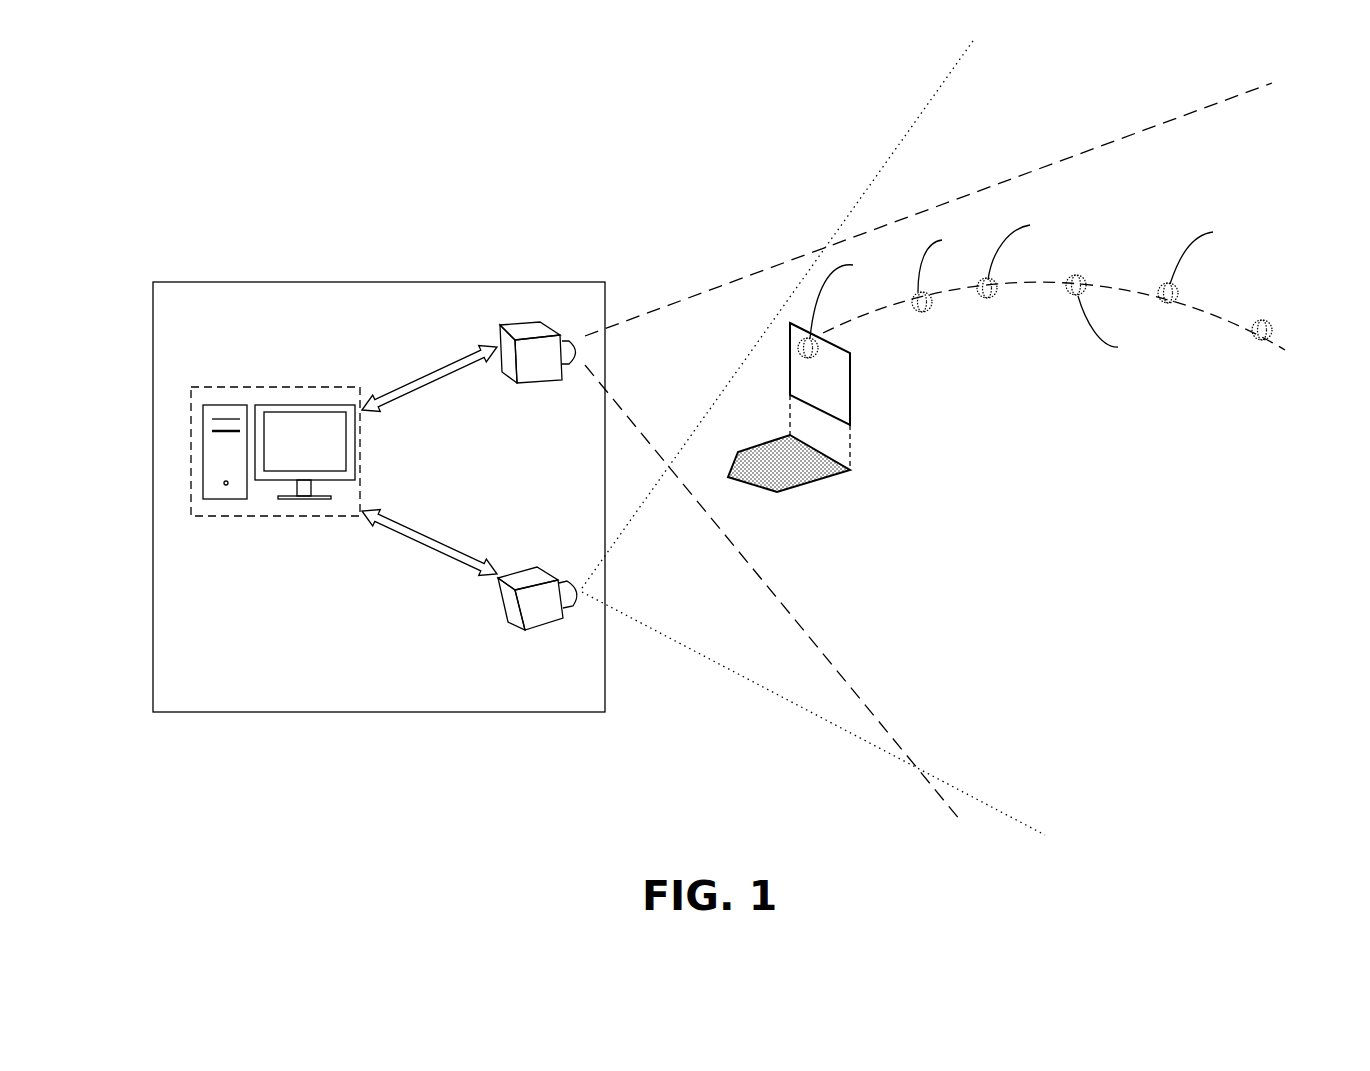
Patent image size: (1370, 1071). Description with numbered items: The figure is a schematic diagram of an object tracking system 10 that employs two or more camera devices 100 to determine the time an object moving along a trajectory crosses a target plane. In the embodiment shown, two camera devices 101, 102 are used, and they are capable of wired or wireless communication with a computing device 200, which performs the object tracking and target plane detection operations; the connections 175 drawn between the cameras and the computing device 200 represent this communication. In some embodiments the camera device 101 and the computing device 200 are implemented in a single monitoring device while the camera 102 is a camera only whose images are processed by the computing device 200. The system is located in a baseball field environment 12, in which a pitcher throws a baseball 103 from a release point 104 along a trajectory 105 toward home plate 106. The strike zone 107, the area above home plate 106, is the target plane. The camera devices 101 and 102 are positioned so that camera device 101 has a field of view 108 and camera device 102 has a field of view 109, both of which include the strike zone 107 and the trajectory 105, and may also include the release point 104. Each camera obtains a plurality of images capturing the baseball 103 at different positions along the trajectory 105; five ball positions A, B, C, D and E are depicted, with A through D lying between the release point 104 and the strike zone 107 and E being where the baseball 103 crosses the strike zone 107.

The object tracking system 10 is at (232, 282).
The baseball field environment 12 is at (663, 168).
The camera devices 100 is at (495, 242).
The camera device 101 is at (537, 383).
The camera device 102 is at (546, 628).
The baseball 103 is at (1074, 276).
The release point 104 is at (1265, 320).
The trajectory 105 is at (1117, 285).
The home plate 106 is at (775, 480).
The strike zone 107 is at (852, 400).
The field of view 108 is at (1097, 147).
The field of view 109 is at (800, 703).
The communication link 175 is at (427, 371).
The computing device 200 is at (280, 387).